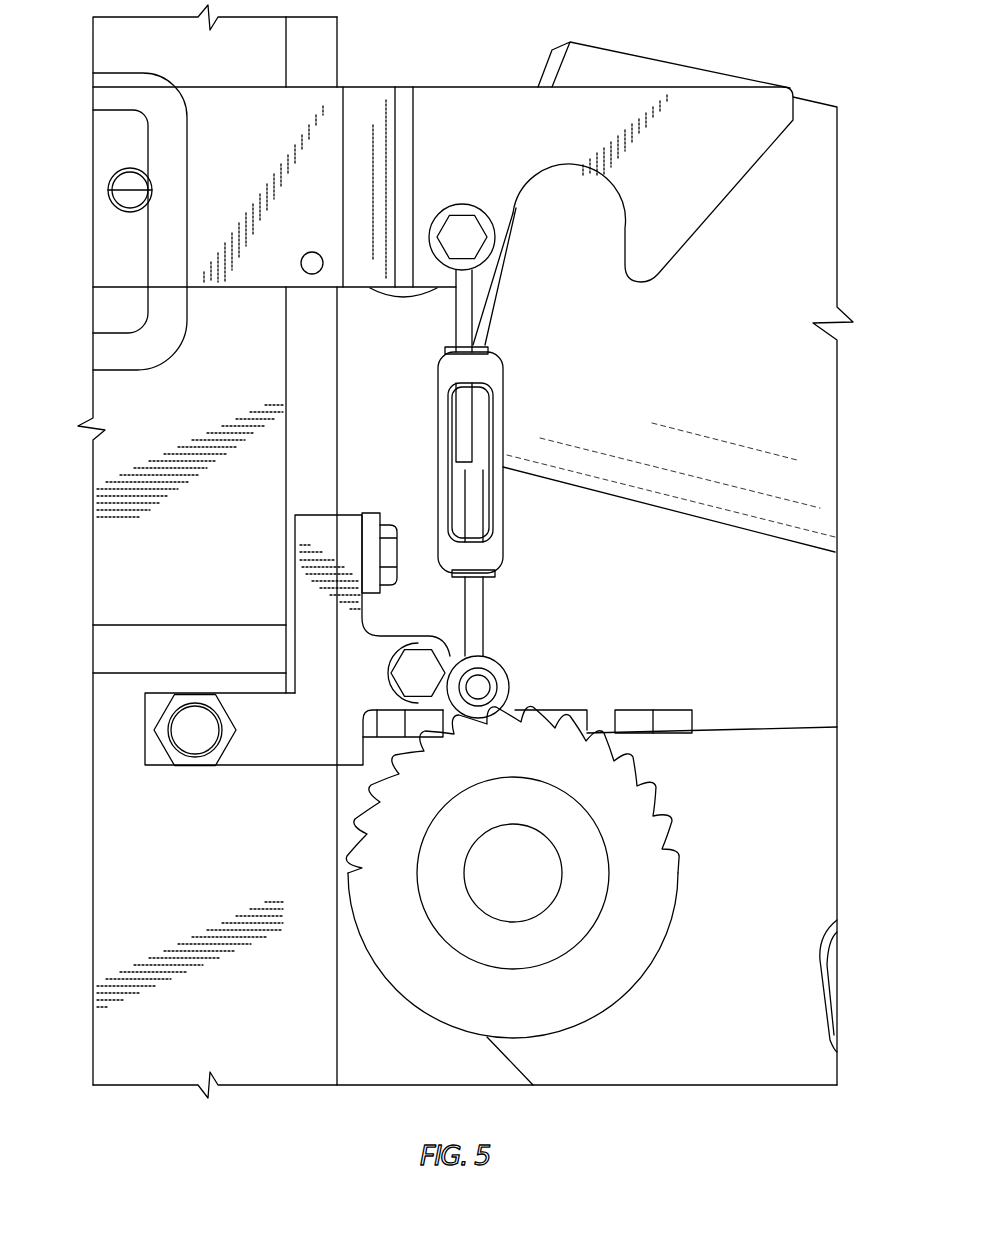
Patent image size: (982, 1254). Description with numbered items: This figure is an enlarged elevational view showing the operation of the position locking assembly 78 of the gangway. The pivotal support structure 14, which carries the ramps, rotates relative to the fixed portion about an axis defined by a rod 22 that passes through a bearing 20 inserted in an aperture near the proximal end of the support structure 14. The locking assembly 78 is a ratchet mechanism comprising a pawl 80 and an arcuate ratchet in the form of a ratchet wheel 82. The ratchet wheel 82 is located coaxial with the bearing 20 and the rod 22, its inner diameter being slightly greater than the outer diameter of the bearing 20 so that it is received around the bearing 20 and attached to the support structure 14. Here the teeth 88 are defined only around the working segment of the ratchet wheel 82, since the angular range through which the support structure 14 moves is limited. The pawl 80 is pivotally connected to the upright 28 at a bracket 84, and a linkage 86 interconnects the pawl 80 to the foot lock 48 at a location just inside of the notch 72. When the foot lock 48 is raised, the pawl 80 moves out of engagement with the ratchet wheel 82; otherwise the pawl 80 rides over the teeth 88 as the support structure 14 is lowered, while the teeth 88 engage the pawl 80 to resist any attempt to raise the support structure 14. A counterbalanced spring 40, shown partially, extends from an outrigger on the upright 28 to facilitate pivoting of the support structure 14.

The support structure 14 is at (813, 740).
The bearing 20 is at (583, 900).
The rod 22 is at (522, 903).
The upright 28 is at (138, 552).
The spring 40 is at (752, 500).
The foot lock 48 is at (377, 103).
The notch 72 is at (517, 222).
The locking assembly 78 is at (527, 527).
The pawl 80 is at (510, 703).
The ratchet wheel 82 is at (635, 858).
The bracket 84 is at (277, 738).
The linkage 86 is at (443, 455).
The teeth 88 is at (667, 782).